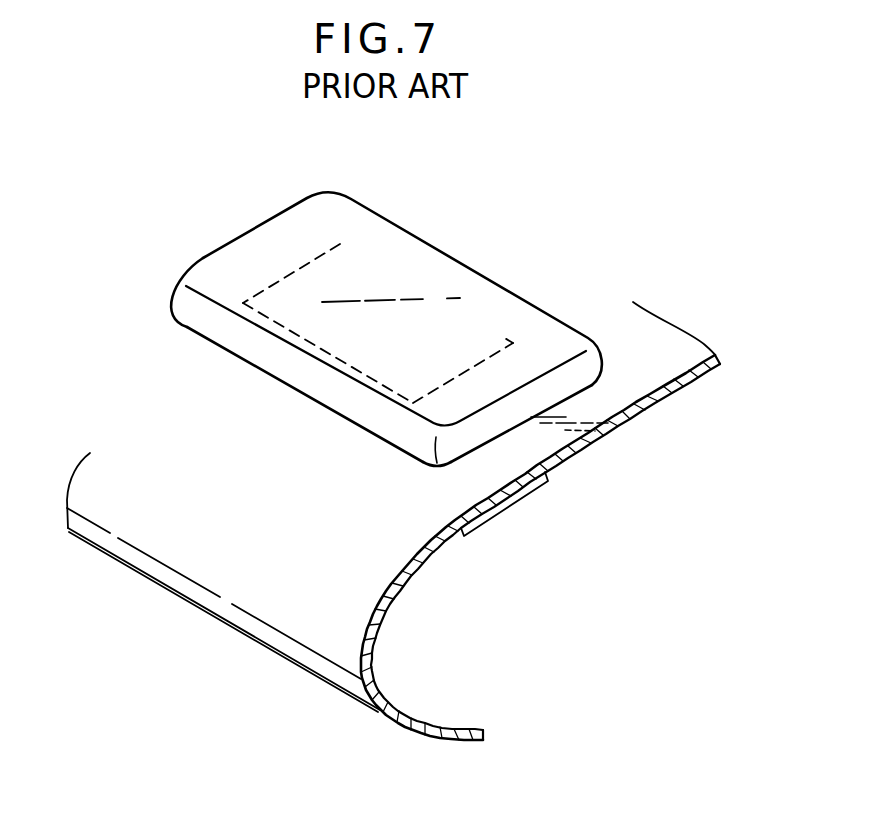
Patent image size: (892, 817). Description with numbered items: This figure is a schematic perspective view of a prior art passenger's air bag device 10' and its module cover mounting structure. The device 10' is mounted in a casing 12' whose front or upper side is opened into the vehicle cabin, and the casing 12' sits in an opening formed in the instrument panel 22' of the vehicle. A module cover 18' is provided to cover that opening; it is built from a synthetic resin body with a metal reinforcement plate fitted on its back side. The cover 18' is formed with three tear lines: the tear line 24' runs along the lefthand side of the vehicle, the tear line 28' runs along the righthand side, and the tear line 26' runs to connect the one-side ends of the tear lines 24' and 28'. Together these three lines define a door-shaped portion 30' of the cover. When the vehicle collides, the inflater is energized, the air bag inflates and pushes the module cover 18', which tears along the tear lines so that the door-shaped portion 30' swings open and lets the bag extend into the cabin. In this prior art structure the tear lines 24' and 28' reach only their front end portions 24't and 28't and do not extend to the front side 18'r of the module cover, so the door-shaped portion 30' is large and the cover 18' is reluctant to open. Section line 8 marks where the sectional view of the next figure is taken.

The passenger's air bag device 10' is at (386, 285).
The casing 12' is at (534, 498).
The module cover 18' is at (341, 325).
The front side of the module cover 18'r is at (521, 313).
The instrument panel 22' is at (394, 521).
The tear line 24' is at (328, 331).
The front end portion of tear line 24' 24't is at (328, 225).
The tear line 26' is at (391, 324).
The tear line 28' is at (463, 353).
The front end portion of tear line 28' 28't is at (560, 295).
The door-shaped portion 30' is at (305, 396).
The section line 8— 8 is at (257, 407).